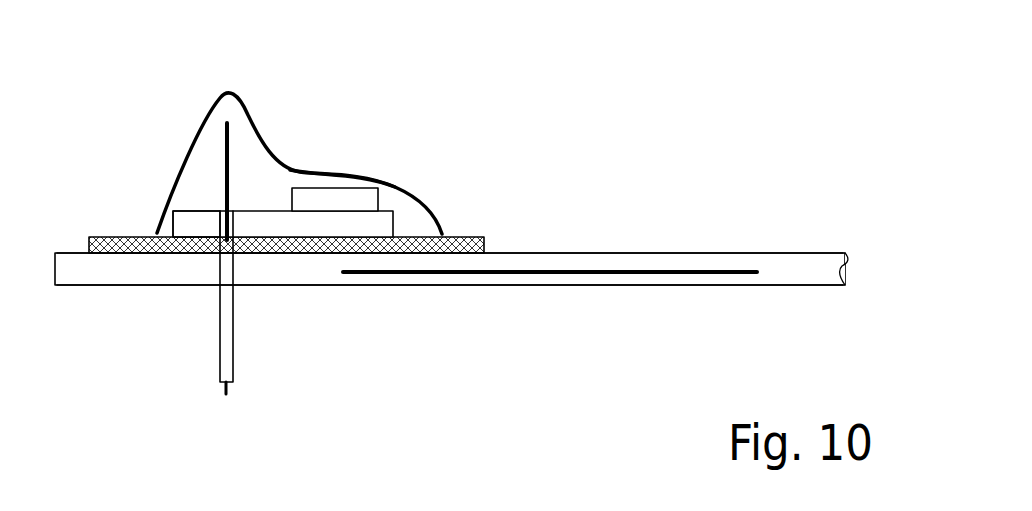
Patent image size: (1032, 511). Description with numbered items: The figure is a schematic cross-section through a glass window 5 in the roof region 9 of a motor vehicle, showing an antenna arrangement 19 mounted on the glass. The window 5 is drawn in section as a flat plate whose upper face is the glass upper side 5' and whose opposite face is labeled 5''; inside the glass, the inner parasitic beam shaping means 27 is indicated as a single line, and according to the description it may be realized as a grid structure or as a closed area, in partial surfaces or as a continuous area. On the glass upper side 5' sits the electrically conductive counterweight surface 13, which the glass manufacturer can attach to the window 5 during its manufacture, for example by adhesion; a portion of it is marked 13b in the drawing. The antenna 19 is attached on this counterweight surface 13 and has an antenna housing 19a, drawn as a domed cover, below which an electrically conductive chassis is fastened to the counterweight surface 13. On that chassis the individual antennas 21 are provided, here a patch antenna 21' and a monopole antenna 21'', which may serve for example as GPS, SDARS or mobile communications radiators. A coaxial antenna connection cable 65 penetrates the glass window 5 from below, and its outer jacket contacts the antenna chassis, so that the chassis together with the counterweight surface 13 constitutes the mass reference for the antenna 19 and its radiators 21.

The motor vehicle roof 9 is at (451, 230).
The glass window 5 is at (451, 264).
The glass upper side 5' is at (450, 221).
The second side of carrier 5'' is at (450, 327).
The parasitic beam shaping means 27 is at (560, 274).
The counterweight surface 13 is at (467, 243).
The portion of sensor element 13b is at (199, 226).
The antenna 19 is at (315, 105).
The antenna housing 19a is at (305, 168).
The individual antennas 21 is at (324, 129).
The patch antenna 21' is at (383, 166).
The monopole antenna 21'' is at (220, 129).
The coaxial antenna connection cable 65 is at (212, 363).